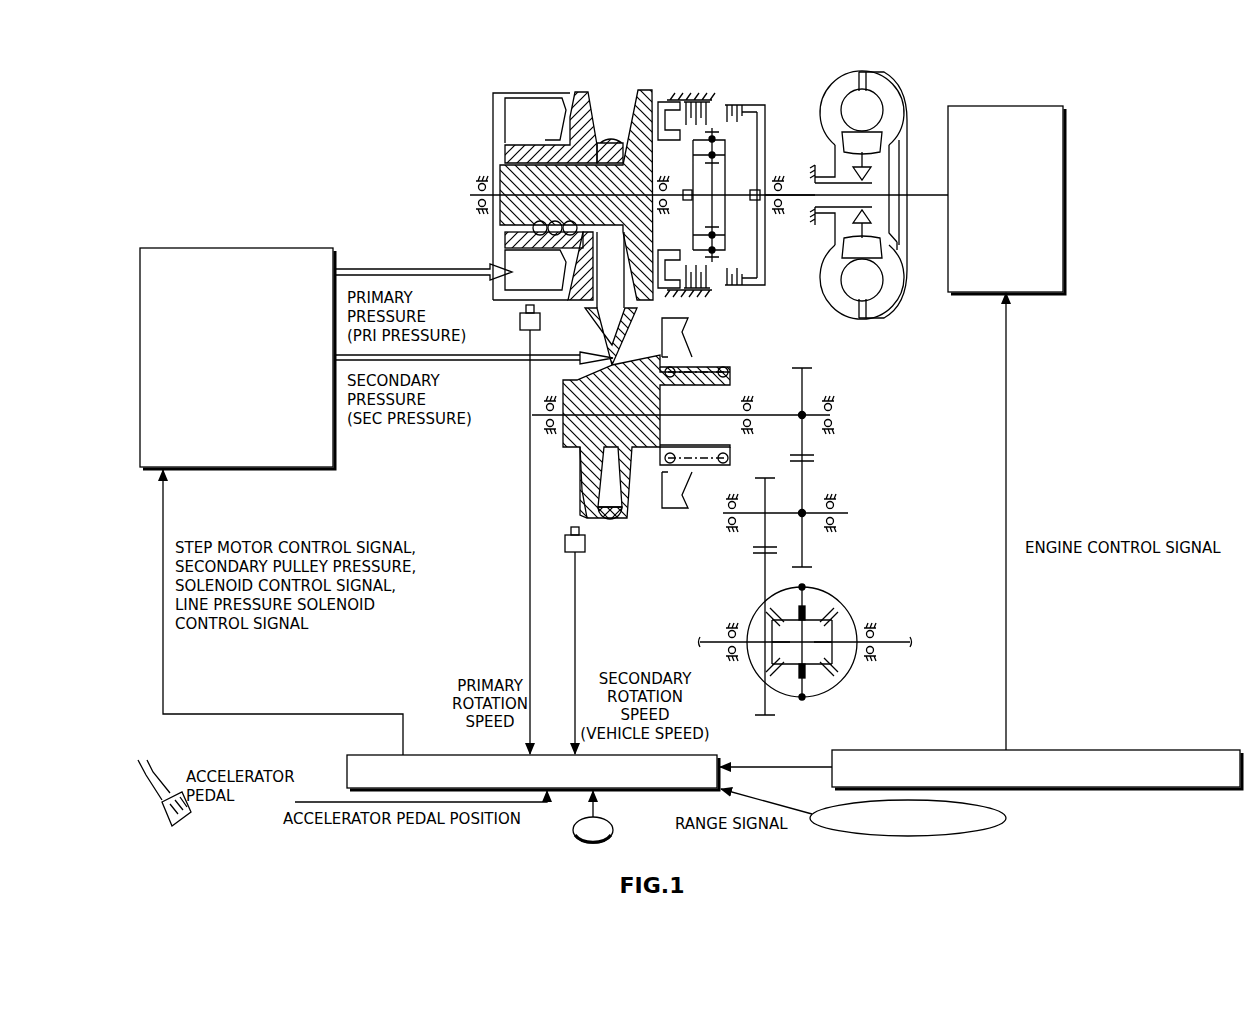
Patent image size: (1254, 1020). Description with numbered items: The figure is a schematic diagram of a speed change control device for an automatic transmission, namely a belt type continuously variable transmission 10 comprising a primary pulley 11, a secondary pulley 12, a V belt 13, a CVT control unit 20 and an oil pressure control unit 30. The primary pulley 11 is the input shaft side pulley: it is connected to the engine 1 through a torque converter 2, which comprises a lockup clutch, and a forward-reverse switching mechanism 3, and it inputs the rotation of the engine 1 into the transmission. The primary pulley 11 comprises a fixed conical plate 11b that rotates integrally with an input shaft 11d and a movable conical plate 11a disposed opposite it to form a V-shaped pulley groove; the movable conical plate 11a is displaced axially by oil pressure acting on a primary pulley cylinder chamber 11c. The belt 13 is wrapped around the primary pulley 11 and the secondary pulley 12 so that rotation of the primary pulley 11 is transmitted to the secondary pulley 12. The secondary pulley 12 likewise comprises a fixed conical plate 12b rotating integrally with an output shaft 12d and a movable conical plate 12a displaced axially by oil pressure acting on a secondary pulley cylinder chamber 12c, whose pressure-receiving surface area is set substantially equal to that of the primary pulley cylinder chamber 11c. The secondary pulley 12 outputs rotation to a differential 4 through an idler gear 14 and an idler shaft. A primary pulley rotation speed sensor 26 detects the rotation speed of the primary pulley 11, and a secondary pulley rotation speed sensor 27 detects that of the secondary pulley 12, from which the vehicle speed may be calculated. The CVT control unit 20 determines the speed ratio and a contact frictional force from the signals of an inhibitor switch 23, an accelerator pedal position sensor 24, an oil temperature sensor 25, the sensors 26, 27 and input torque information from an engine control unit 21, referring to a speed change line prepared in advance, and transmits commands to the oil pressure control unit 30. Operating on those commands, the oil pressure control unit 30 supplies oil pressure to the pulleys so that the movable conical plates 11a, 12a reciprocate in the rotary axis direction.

The engine 1 is at (978, 105).
The torque converter 2 is at (860, 70).
The forward-reverse switching mechanism 3 is at (693, 92).
The differential 4 is at (843, 598).
The belt type continuously variable transmission 10 is at (579, 164).
The primary pulley 11 is at (579, 167).
The movable conical plate 11a is at (586, 90).
The fixed conical plate 11b is at (655, 92).
The primary pulley cylinder chamber 11c is at (535, 98).
The input shaft 11d is at (797, 203).
The secondary pulley 12 is at (681, 432).
The movable conical plate 12a is at (632, 520).
The fixed conical plate 12b is at (583, 480).
The secondary pulley cylinder chamber 12c is at (658, 508).
The output shaft 12d is at (775, 410).
The V belt 13 is at (620, 294).
The idler gear 14 is at (770, 480).
The CVT control unit 20 is at (371, 768).
The engine control unit 21 is at (878, 764).
The inhibitor switch 23 is at (1006, 818).
The accelerator pedal position sensor 24 is at (160, 773).
The oil temperature sensor 25 is at (605, 826).
The primary pulley rotation speed sensor 26 is at (520, 321).
The secondary pulley rotation speed sensor 27 is at (565, 545).
The oil pressure control unit 30 is at (228, 248).